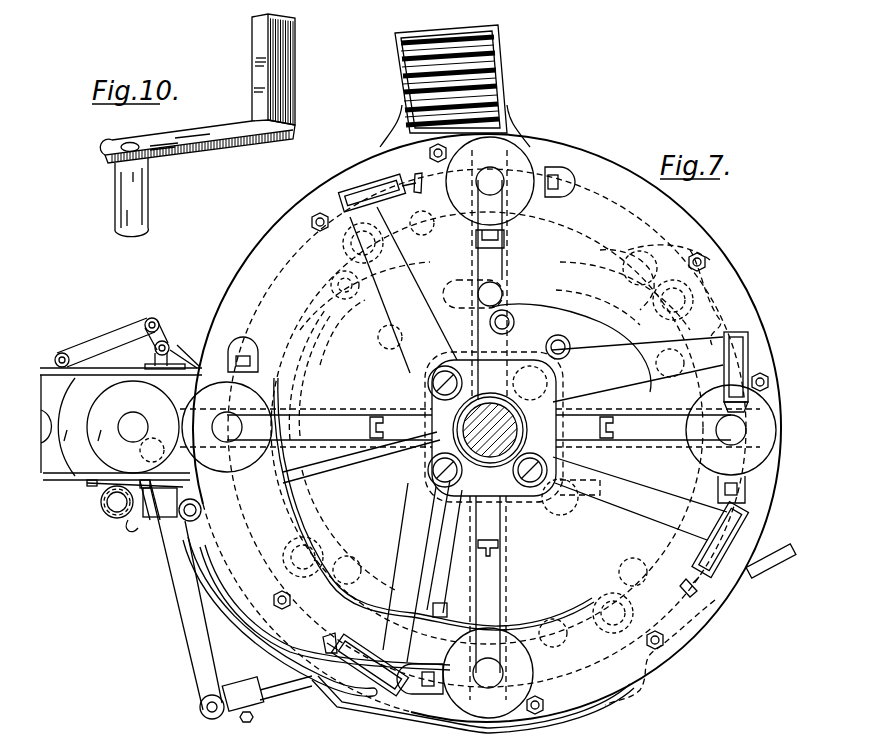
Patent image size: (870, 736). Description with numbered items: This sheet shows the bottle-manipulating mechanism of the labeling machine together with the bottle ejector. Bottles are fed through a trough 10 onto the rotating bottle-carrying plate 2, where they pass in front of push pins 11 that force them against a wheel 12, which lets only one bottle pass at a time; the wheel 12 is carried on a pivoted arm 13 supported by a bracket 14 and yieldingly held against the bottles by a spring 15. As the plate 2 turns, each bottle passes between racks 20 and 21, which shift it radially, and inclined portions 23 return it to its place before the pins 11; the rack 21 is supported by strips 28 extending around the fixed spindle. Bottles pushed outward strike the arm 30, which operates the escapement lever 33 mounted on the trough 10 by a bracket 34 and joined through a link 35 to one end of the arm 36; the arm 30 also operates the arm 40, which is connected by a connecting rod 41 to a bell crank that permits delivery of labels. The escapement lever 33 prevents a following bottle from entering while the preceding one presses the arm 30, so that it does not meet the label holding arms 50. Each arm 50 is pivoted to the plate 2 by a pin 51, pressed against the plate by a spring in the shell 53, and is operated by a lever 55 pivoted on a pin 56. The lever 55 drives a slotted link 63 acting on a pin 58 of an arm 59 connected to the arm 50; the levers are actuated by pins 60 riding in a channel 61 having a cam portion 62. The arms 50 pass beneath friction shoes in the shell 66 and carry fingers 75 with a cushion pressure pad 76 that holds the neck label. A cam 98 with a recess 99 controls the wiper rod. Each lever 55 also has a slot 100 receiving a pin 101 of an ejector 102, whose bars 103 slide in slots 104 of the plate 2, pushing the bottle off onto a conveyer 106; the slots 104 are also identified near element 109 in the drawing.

In FIG. 7, the bottle-carrying plate 2 is at (698, 229).
In FIG. 7, the trough 10 is at (68, 479).
In FIG. 7, the push pins 11 is at (563, 181).
In FIG. 7, the wheel 12 is at (155, 536).
In FIG. 7, the pivoted arm 13 is at (180, 506).
In FIG. 7, the bracket 14 is at (100, 505).
In FIG. 7, the spring 15 is at (128, 526).
In FIG. 7, the rack 20 is at (346, 722).
In FIG. 7, the rack 21 is at (385, 590).
In FIG. 7, the inclined portions 23 is at (386, 621).
In FIG. 7, the strips 28 is at (400, 411).
In FIG. 7, the arm 30 is at (280, 661).
In FIG. 7, the escapement lever 33 is at (172, 356).
In FIG. 7, the bracket 34 is at (170, 336).
In FIG. 7, the link 35 is at (102, 340).
In FIG. 7, the arm 36 is at (110, 402).
In FIG. 7, the arm 40 is at (185, 611).
In FIG. 7, the connecting rod 41 is at (280, 700).
In FIG. 7, the label holding arms 50 is at (344, 239).
In FIG. 7, the pin 51 is at (378, 341).
In FIG. 7, the block or shell 53 is at (575, 446).
In FIG. 7, the levers 55 is at (495, 296).
In FIG. 7, the pins 56 is at (521, 429).
In FIG. 7, the pins 58 is at (440, 334).
In FIG. 7, the arms 59 is at (425, 362).
In FIG. 7, the pins 60 is at (633, 263).
In FIG. 7, the channel 61 is at (545, 232).
In FIG. 7, the cam portion 62 is at (632, 250).
In FIG. 7, the slotted links 63 is at (608, 338).
In FIG. 7, the shell 66 is at (570, 348).
In FIG. 7, the fingers 75 is at (410, 179).
In FIG. 7, the cushion pressure pad 76 is at (424, 171).
In FIG. 7, the cam 98 is at (402, 159).
In FIG. 7, the recess 99 is at (640, 696).
In FIG. 7, the slot 100 is at (461, 286).
In FIG. 10, the pin 101 is at (150, 202).
In FIG. 10, the ejector 102 is at (260, 42).
In FIG. 7, the ejector 102 is at (612, 421).
In FIG. 10, the bars 103 is at (215, 150).
In FIG. 7, the bars 103 is at (496, 527).
In FIG. 7, the slots 104 is at (340, 422).
In FIG. 7, the conveyer 106 is at (492, 68).
In FIG. 7, the slot 109 is at (657, 455).